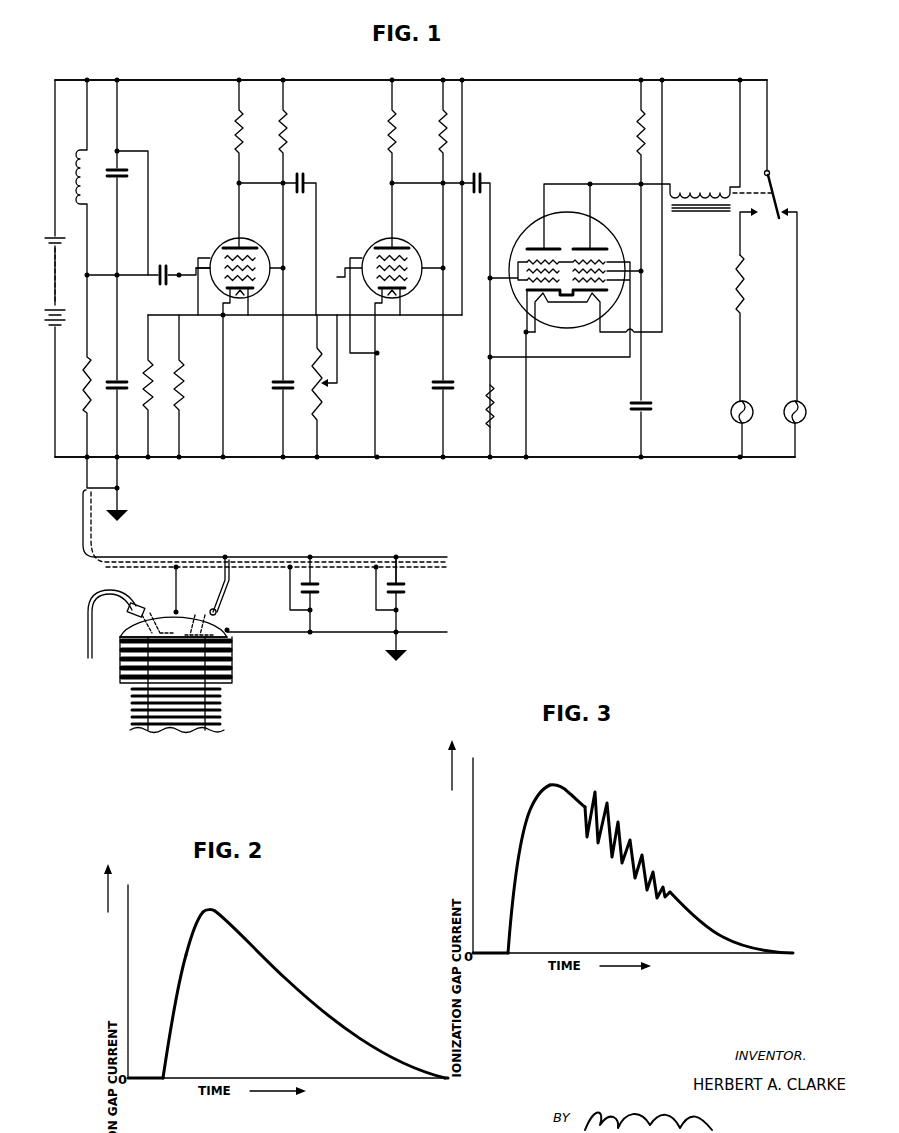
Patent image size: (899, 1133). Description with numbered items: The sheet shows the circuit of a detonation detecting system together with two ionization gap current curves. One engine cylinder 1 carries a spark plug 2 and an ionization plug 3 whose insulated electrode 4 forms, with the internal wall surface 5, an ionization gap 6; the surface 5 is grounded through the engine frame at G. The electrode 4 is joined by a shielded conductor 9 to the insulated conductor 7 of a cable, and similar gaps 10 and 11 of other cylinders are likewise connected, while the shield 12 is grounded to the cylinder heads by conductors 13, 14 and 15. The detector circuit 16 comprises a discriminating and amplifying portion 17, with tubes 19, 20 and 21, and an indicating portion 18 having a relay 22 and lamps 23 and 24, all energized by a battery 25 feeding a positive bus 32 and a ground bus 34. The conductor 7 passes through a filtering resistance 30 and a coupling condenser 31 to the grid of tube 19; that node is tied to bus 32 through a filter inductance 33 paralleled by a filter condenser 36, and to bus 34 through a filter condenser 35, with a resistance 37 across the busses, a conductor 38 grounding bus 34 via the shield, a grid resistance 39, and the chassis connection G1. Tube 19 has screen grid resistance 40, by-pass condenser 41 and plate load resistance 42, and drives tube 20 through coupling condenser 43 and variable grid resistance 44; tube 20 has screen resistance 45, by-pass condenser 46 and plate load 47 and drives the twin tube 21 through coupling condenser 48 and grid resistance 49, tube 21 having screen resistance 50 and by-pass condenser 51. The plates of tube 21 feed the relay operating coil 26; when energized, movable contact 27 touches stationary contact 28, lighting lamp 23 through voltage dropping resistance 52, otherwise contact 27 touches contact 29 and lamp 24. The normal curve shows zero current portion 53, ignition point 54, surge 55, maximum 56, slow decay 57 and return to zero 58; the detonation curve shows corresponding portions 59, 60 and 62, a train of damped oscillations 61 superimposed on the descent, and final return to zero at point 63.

In FIG. 1, the cylinder 1 is at (138, 690).
In FIG. 1, the spark plug 2 is at (128, 614).
In FIG. 1, the ionization plug 3 is at (333, 540).
In FIG. 1, the electrode 4 is at (232, 645).
In FIG. 1, the internal wall surface 5 is at (164, 610).
In FIG. 1, the ionization gap 6 is at (208, 608).
In FIG. 1, the insulated conductor 7 is at (268, 556).
In FIG. 1, the shielded conductor 9 is at (220, 586).
In FIG. 1, the ionization gap 10 is at (318, 588).
In FIG. 1, the ionization gap 11 is at (406, 588).
In FIG. 1, the shield 12 is at (396, 556).
In FIG. 1, the conductor 13 is at (170, 583).
In FIG. 1, the conductor 14 is at (290, 590).
In FIG. 1, the conductor 15 is at (374, 600).
In FIG. 1, the detonation detector circuit 16 is at (118, 38).
In FIG. 1, the discriminating and amplifying circuit portion 17 is at (410, 464).
In FIG. 1, the indicating circuit portion 18 is at (785, 164).
In FIG. 1, the vacuum tube 19 is at (246, 240).
In FIG. 1, the vacuum tube 20 is at (398, 240).
In FIG. 1, the twin tube 21 is at (600, 226).
In FIG. 1, the relay 22 is at (722, 224).
In FIG. 1, the indicating lamp 23 is at (731, 410).
In FIG. 1, the indicating lamp 24 is at (786, 410).
In FIG. 1, the battery 25 is at (52, 308).
In FIG. 1, the operating coil 26 is at (702, 190).
In FIG. 1, the movable contact member 27 is at (778, 192).
In FIG. 1, the stationary contact member 28 is at (757, 216).
In FIG. 1, the stationary contact member 29 is at (786, 218).
In FIG. 1, the filtering resistance 30 is at (73, 366).
In FIG. 1, the coupling condenser 31 is at (160, 272).
In FIG. 1, the positive bus 32 is at (335, 80).
In FIG. 1, the filter inductance 33 is at (88, 168).
In FIG. 1, the ground bus 34 is at (488, 457).
In FIG. 1, the filter condenser 35 is at (122, 380).
In FIG. 1, the filter condenser 36 is at (128, 178).
In FIG. 1, the resistance 37 is at (155, 380).
In FIG. 1, the conductor 38 is at (108, 488).
In FIG. 1, the grid resistance 39 is at (184, 394).
In FIG. 1, the screen grid resistance 40 is at (287, 127).
In FIG. 1, the by-pass condenser 41 is at (272, 386).
In FIG. 1, the plate load resistance 42 is at (234, 130).
In FIG. 1, the coupling condenser 43 is at (302, 172).
In FIG. 1, the variable grid resistance 44 is at (322, 398).
In FIG. 1, the screen grid resistance 45 is at (438, 130).
In FIG. 1, the by-pass condenser 46 is at (432, 386).
In FIG. 1, the plate load resistance 47 is at (386, 130).
In FIG. 1, the coupling condenser 48 is at (478, 172).
In FIG. 1, the grid resistance 49 is at (484, 404).
In FIG. 1, the screen grid resistance 50 is at (636, 130).
In FIG. 1, the by-pass condenser 51 is at (630, 410).
In FIG. 1, the voltage dropping resistance 52 is at (746, 282).
In FIG. 2, the curve portion 53 is at (137, 1077).
In FIG. 2, the point 54 is at (166, 1076).
In FIG. 2, the curve portion 55 is at (174, 976).
In FIG. 2, the point 56 is at (211, 908).
In FIG. 2, the curve portion 57 is at (284, 974).
In FIG. 2, the point 58 is at (430, 1076).
In FIG. 3, the curve portion 59 is at (480, 952).
In FIG. 3, the curve portion 60 is at (518, 846).
In FIG. 3, the curve portion 61 is at (648, 808).
In FIG. 3, the point 62 is at (553, 784).
In FIG. 3, the point 63 is at (768, 951).
In FIG. 1, the ground G is at (392, 640).
In FIG. 1, the chassis connection G1 is at (130, 516).